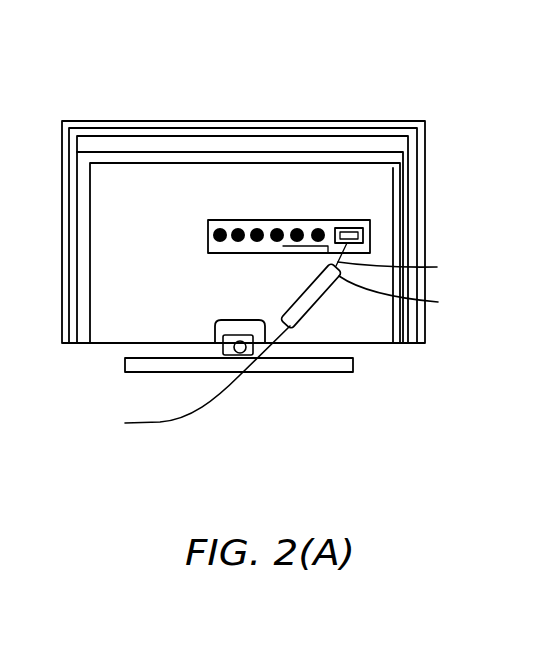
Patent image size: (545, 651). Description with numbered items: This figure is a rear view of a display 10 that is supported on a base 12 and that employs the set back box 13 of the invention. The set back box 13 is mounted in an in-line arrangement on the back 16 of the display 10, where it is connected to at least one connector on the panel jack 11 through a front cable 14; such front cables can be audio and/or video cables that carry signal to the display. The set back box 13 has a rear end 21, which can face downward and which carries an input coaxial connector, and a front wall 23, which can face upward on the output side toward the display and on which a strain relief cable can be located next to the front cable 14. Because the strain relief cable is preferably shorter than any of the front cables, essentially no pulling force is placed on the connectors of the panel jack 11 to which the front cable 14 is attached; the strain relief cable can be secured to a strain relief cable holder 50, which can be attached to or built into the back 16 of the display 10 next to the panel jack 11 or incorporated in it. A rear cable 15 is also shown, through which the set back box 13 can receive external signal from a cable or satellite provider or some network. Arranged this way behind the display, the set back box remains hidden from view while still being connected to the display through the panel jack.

The display 10 is at (125, 121).
The panel jack 11 is at (287, 220).
The strain relief cable holder 50 is at (327, 220).
The back 16 is at (353, 193).
The set back box 13 is at (307, 297).
The front cable 14 is at (405, 269).
The front wall 23 is at (406, 297).
The rear end 21 is at (288, 332).
The base 12 is at (320, 373).
The rear cable 15 is at (160, 422).